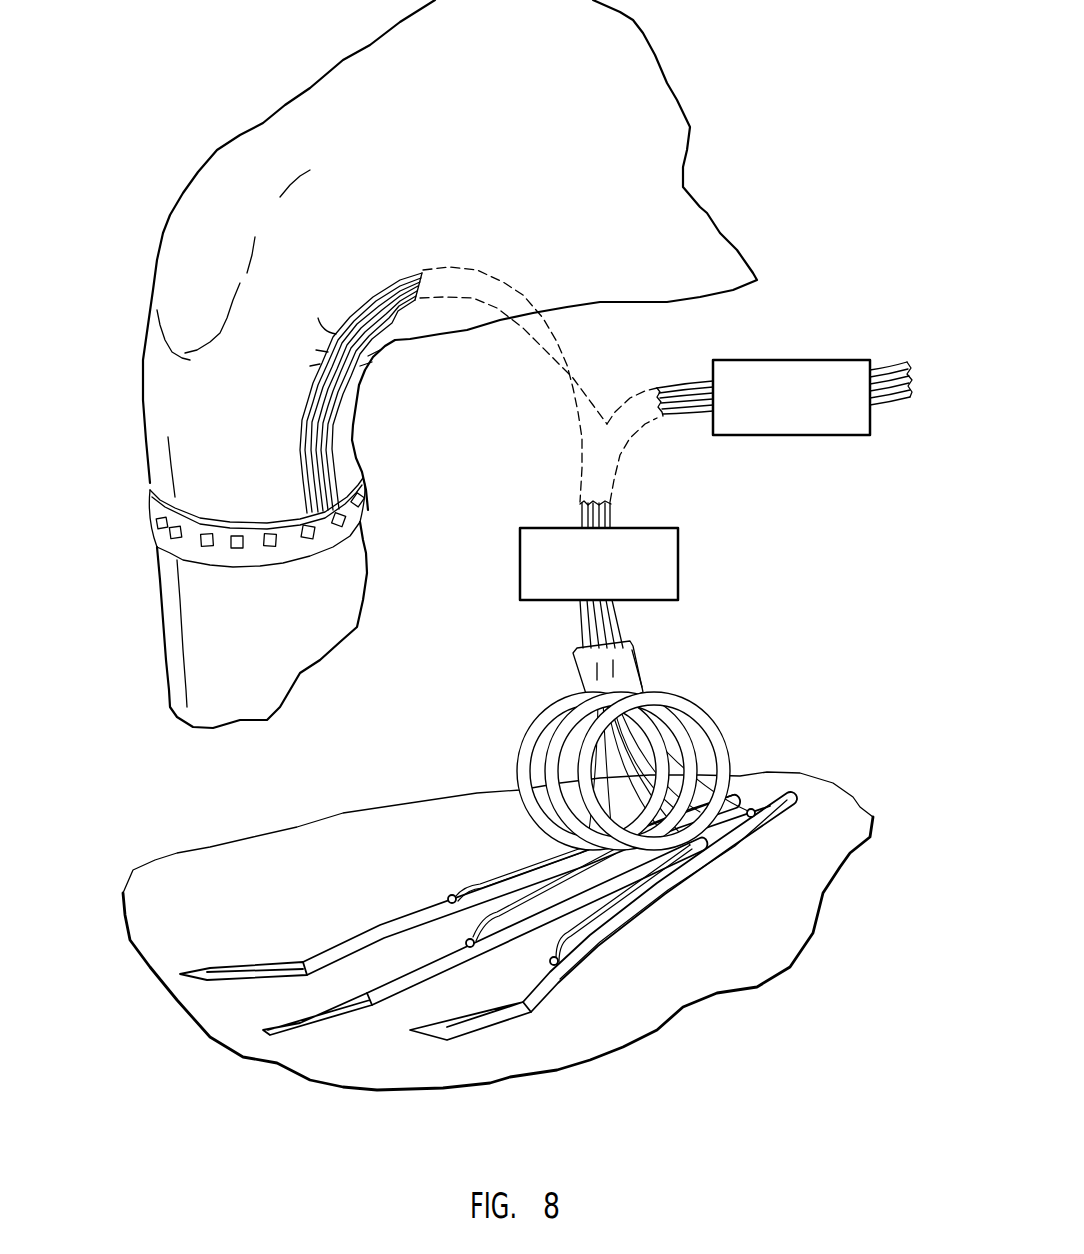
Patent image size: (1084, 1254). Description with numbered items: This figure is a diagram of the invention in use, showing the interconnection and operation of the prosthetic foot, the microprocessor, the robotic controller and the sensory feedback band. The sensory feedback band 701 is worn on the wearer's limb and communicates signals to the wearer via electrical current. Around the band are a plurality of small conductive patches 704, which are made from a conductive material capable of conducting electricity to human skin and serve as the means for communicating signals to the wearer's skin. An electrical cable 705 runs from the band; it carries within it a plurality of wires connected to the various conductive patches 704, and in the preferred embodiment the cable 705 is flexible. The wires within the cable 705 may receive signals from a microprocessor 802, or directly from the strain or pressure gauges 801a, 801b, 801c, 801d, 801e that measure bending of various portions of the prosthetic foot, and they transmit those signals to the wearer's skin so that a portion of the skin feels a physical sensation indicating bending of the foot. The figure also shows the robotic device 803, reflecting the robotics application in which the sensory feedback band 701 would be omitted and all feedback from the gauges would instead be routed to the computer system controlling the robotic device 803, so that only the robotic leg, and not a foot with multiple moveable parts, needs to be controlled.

The sensory feedback band 701 is at (137, 503).
The conductive patches 704 is at (177, 537).
The electrical cable 705 is at (323, 395).
The microprocessor 802 is at (657, 528).
The robotic device 803 is at (790, 360).
The strain or pressure gauge 801a is at (558, 958).
The strain or pressure gauge 801b is at (468, 946).
The strain or pressure gauge 801c is at (450, 896).
The strain or pressure gauge 801d is at (755, 809).
The strain or pressure gauge 801e is at (681, 809).